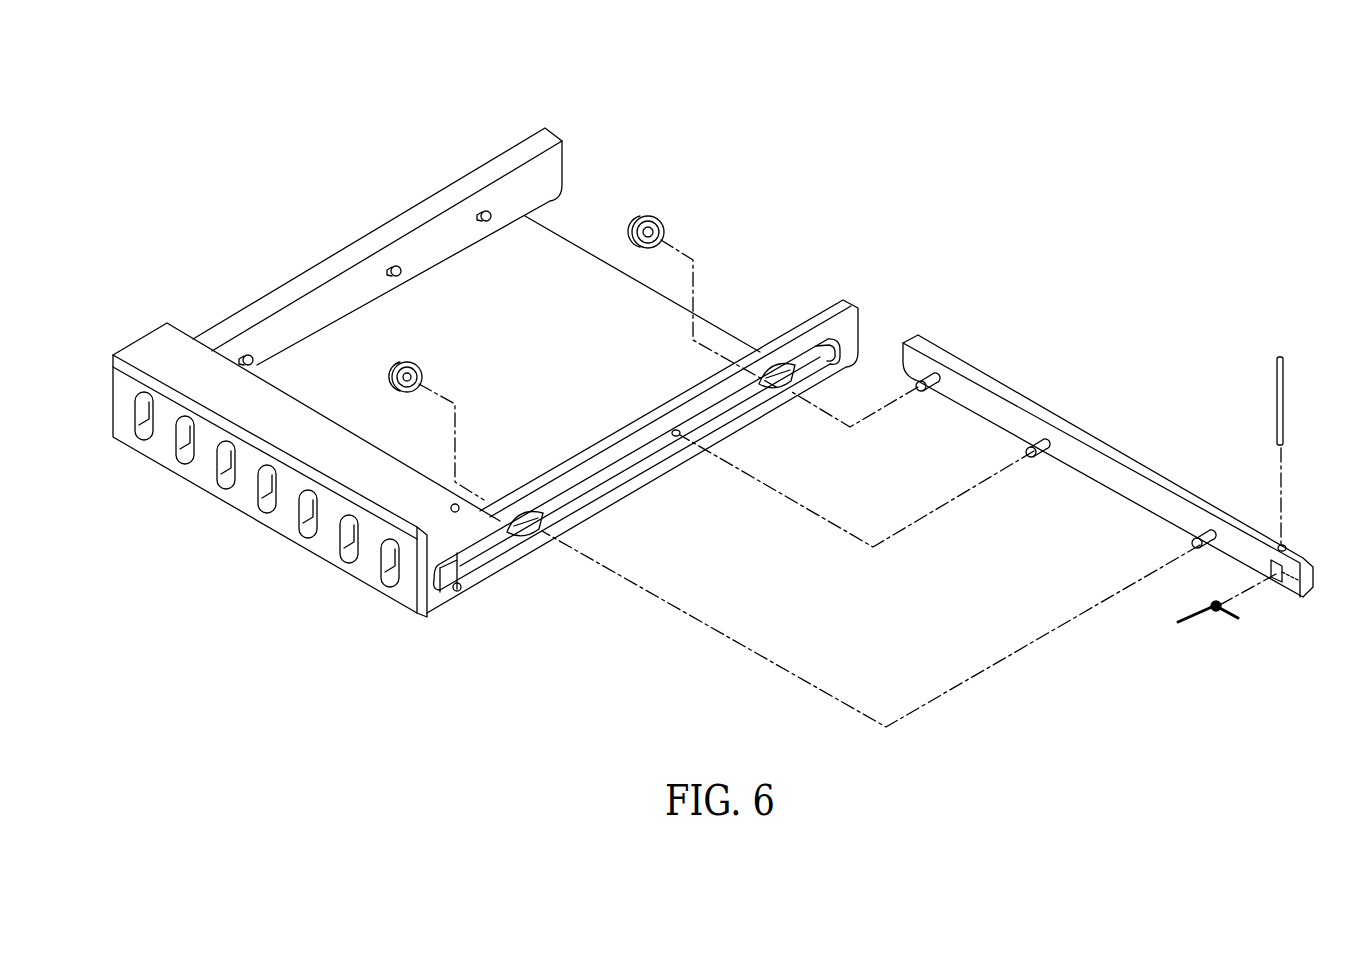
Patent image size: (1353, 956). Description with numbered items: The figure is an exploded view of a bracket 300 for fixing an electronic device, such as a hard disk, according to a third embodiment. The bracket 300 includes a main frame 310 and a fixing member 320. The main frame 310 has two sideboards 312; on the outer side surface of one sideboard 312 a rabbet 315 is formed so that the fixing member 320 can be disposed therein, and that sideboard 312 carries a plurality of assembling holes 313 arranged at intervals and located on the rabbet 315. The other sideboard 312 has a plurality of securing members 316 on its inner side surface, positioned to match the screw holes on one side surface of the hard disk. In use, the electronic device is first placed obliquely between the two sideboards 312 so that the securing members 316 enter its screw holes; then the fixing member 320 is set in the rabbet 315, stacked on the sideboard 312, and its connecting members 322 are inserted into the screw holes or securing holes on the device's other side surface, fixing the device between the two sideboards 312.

The bracket 300 is at (273, 182).
The main frame 310 is at (278, 554).
The sideboard 312 is at (492, 167).
The assembling hole 313 is at (530, 540).
The rabbet 315 is at (622, 478).
The securing member 316 is at (250, 354).
The fixing member 320 is at (1008, 390).
The connecting member 322 is at (1048, 462).